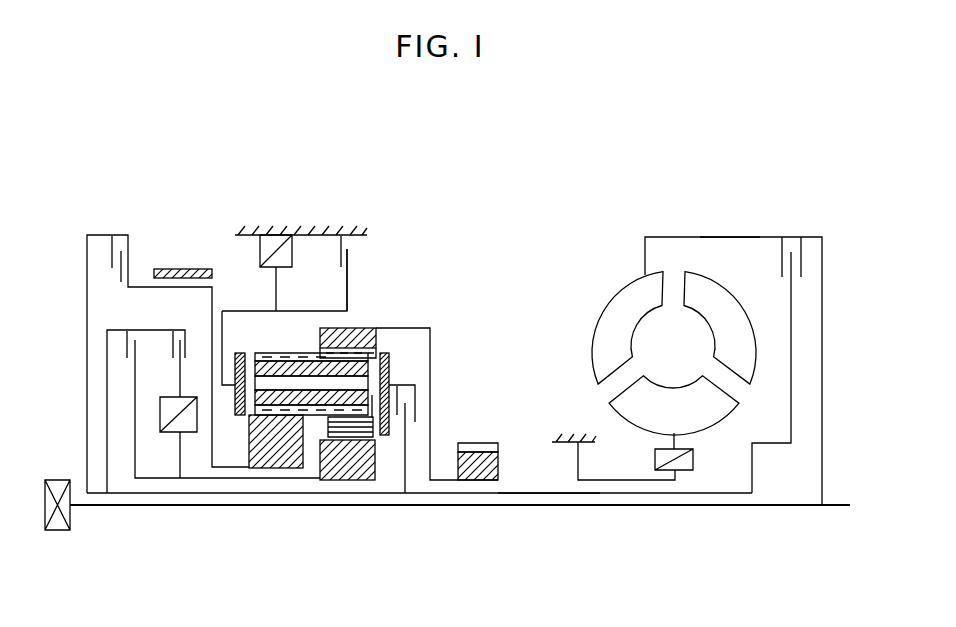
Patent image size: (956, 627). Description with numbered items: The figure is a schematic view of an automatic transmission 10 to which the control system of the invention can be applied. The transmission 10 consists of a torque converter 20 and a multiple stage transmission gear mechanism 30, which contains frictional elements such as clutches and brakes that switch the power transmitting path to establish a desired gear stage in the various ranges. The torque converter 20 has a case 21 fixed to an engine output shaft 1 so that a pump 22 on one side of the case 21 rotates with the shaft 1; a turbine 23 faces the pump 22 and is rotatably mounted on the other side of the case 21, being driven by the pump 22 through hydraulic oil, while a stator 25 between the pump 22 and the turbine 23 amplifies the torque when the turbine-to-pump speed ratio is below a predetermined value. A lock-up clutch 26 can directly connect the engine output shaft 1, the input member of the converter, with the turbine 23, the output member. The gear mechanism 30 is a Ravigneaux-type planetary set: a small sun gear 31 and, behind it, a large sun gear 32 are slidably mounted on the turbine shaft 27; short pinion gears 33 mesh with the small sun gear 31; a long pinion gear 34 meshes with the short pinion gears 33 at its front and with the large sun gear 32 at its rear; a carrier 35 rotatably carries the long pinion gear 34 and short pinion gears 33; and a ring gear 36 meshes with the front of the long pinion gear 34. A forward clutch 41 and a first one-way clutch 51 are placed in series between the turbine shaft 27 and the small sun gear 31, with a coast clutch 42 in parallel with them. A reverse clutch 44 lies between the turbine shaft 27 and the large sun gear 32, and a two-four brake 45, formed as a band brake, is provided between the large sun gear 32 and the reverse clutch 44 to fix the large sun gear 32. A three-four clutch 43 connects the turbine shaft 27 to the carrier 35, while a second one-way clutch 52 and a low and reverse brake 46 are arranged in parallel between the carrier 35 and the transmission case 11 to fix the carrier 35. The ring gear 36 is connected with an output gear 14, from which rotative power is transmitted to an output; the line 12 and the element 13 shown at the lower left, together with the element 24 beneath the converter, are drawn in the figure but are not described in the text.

The engine output shaft 1 is at (838, 503).
The automatic transmission 10 is at (796, 205).
The transmission case 11 is at (330, 235).
The power line 12 is at (138, 506).
The power source 13 is at (58, 531).
The output gear 14 is at (470, 445).
The torque converter 20 is at (768, 237).
The case 21 is at (716, 237).
The pump 22 is at (600, 330).
The turbine 23 is at (731, 322).
The relay 24 is at (693, 460).
The stator 25 is at (671, 410).
The lock-up clutch 26 is at (797, 270).
The turbine shaft 27 is at (530, 494).
The multiple stage transmission gear mechanism 30 is at (446, 354).
The small sun gear 31 is at (340, 468).
The large sun gear 32 is at (276, 456).
The short pinion gears 33 is at (356, 440).
The long pinion gear 34 is at (280, 370).
The carrier 35 is at (384, 356).
The ring gear 36 is at (358, 340).
The forward clutch 41 is at (192, 355).
The coast clutch 42 is at (150, 355).
The 3-4 clutch 43 is at (399, 387).
The reverse clutch 44 is at (128, 258).
The 2-4 brake 45 is at (190, 268).
The low & reverse brake 46 is at (352, 253).
The first one-way clutch 51 is at (160, 416).
The second one-way clutch 52 is at (290, 255).